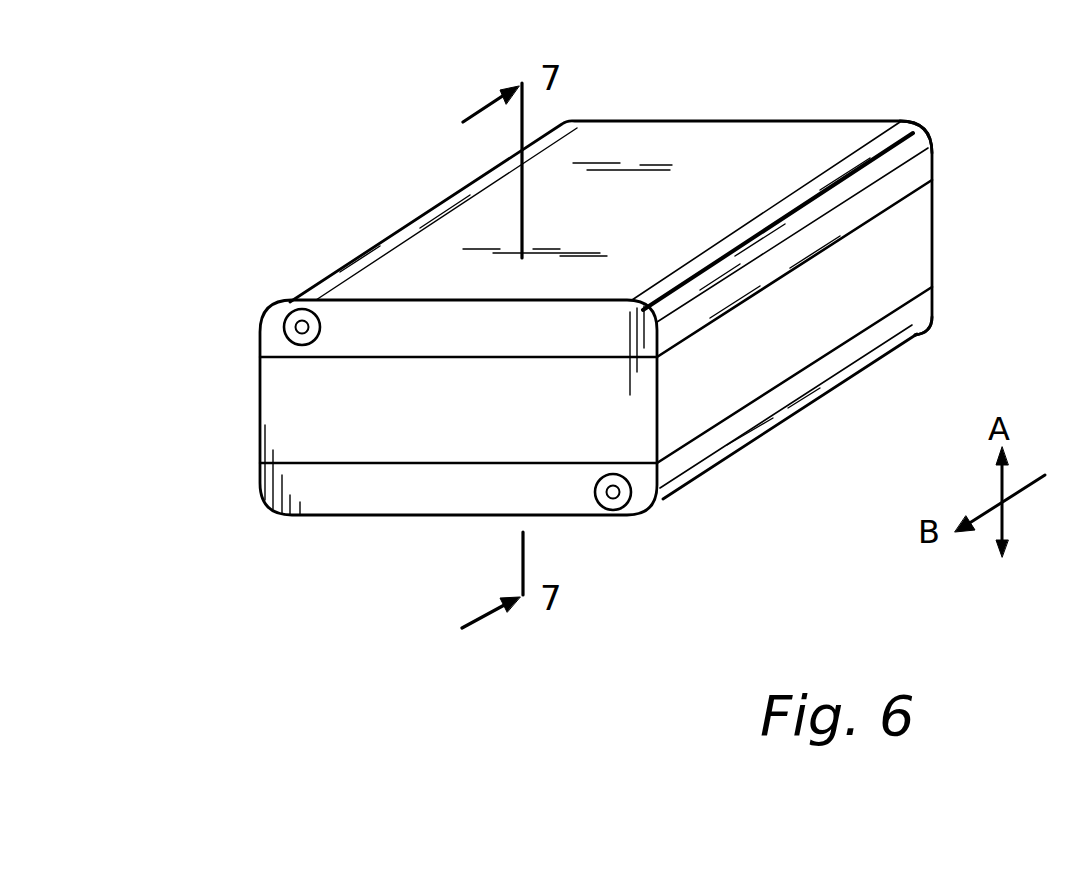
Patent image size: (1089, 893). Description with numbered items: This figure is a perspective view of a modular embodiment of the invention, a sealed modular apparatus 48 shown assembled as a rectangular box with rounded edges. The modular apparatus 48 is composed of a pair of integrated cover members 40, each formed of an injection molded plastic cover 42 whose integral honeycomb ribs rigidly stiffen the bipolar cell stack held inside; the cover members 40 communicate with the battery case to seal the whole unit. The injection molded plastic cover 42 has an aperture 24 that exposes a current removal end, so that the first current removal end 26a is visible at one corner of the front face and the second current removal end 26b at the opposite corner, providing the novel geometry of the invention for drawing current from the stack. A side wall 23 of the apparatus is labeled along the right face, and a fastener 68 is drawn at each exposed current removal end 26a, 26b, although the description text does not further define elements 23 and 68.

The side wall 23 is at (917, 233).
The aperture 24 is at (283, 355).
The first current removal end 26a is at (283, 332).
The second current removal end 26b is at (630, 517).
The integrated cover member 40 is at (897, 117).
The injection molded plastic cover 42 is at (737, 133).
The modular apparatus 48 is at (274, 538).
The fastener 68 is at (298, 318).